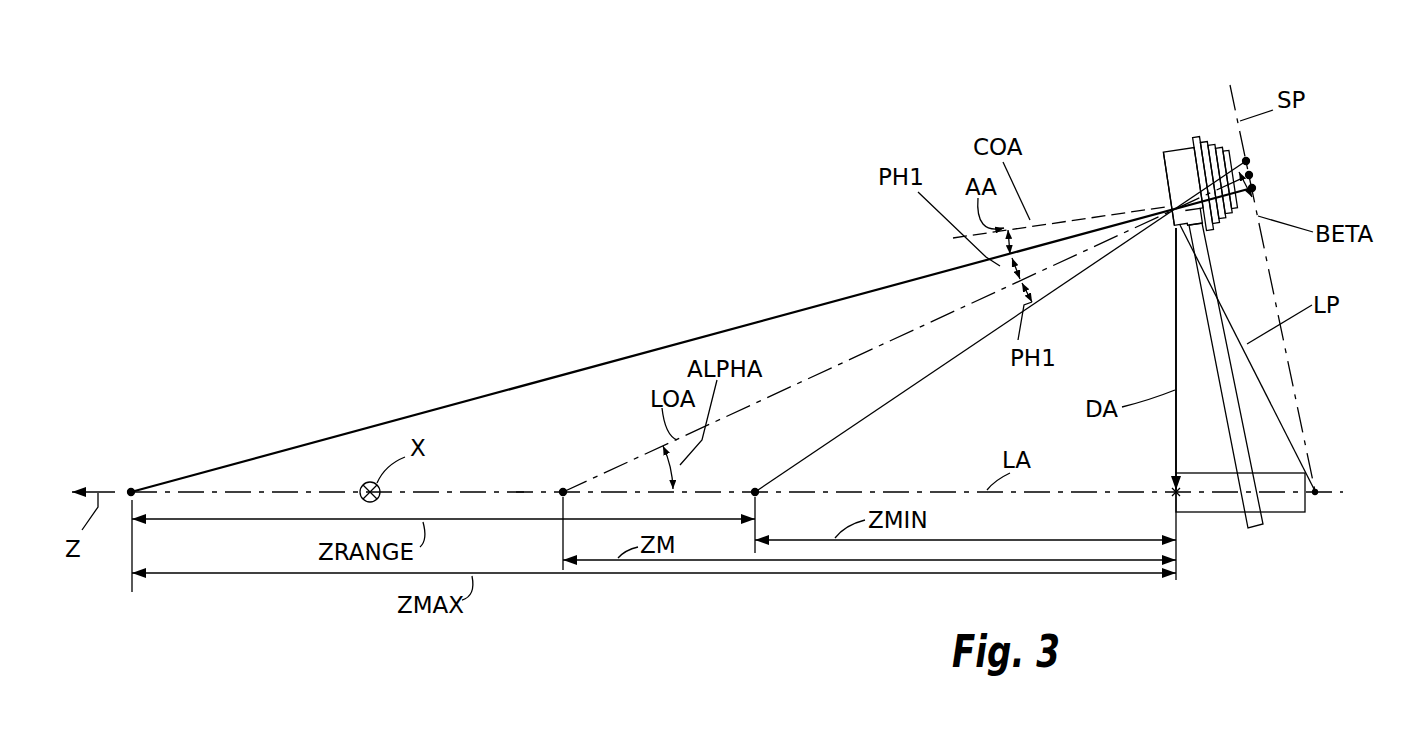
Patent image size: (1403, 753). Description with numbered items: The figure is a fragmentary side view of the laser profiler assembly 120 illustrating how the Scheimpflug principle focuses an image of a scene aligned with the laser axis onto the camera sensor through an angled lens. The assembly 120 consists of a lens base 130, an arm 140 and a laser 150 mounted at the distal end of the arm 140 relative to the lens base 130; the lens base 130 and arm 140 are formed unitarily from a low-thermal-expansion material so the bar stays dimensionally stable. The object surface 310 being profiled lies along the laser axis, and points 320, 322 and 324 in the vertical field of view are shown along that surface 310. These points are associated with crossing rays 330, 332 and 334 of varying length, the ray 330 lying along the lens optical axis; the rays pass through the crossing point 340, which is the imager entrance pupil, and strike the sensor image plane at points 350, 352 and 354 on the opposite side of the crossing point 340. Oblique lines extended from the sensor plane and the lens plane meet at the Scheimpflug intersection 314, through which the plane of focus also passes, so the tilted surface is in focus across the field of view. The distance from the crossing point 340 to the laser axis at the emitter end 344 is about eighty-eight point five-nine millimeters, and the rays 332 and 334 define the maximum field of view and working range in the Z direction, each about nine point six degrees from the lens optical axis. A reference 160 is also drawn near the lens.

The laser profiler assembly 120 is at (1203, 328).
The lens base 130 is at (1163, 173).
The arm 140 is at (1228, 395).
The laser 150 is at (1217, 505).
The entrance pupil 160 is at (1160, 197).
The object surface 310 is at (520, 487).
The Scheimpflug intersection 314 is at (1317, 490).
The point 320 is at (563, 487).
The point 322 is at (133, 485).
The point 324 is at (755, 487).
The crossing ray 330 is at (803, 378).
The crossing ray 332 is at (687, 342).
The crossing ray 334 is at (877, 409).
The crossing point 340 is at (1174, 152).
The emitter end 344 is at (1172, 497).
The point 350 is at (1255, 175).
The point 352 is at (1258, 189).
The point 354 is at (1252, 161).